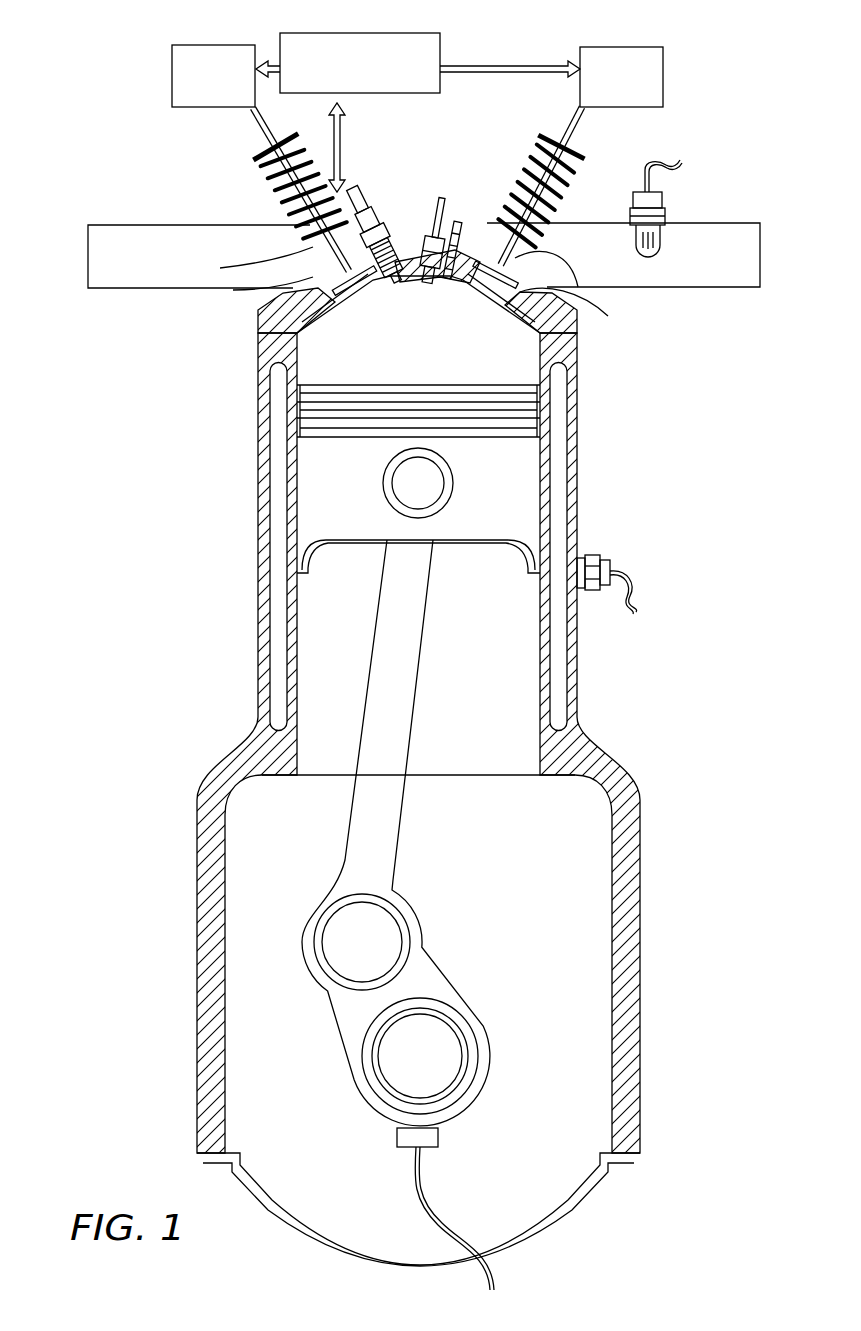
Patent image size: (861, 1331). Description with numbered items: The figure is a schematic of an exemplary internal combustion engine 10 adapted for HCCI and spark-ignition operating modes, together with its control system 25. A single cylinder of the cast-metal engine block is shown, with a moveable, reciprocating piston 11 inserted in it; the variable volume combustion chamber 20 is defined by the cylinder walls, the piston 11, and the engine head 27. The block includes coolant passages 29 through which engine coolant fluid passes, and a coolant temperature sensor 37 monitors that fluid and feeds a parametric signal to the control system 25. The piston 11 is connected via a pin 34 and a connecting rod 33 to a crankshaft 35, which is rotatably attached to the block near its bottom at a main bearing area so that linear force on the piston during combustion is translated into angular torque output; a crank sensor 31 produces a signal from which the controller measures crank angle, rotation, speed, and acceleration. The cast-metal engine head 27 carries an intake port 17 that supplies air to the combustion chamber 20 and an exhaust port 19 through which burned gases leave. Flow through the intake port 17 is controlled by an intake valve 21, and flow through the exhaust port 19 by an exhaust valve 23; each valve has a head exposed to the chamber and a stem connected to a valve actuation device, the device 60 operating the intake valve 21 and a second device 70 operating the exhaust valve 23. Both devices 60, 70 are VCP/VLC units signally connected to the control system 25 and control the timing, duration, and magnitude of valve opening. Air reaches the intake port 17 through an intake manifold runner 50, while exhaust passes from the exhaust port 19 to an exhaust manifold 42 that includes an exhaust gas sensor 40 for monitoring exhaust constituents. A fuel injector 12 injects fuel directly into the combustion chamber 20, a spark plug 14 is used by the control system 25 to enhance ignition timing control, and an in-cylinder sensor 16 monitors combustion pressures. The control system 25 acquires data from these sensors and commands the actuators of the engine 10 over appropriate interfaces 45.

The internal combustion engine 10 is at (110, 420).
The piston 11 is at (512, 489).
The fuel injector 12 is at (433, 237).
The spark plug 14 is at (367, 205).
The in-cylinder sensor 16 is at (457, 225).
The intake port 17 is at (290, 284).
The exhaust port 19 is at (574, 290).
The combustion chamber 20 is at (315, 360).
The intake valve 21 is at (300, 252).
The exhaust valve 23 is at (520, 263).
The control system 25 is at (432, 45).
The engine head 27 is at (565, 322).
The coolant passages 29 is at (560, 420).
The crank sensor 31 is at (397, 1138).
The connecting rod 33 is at (393, 640).
The pin 34 is at (408, 483).
The crankshaft 35 is at (363, 1053).
The coolant temperature sensor 37 is at (600, 570).
The exhaust gas sensor 40 is at (660, 215).
The exhaust manifold 42 is at (738, 257).
The interfaces 45 is at (347, 130).
The intake manifold runner 50 is at (160, 280).
The valve actuation device 60 is at (178, 52).
The valve actuation device 70 is at (655, 55).